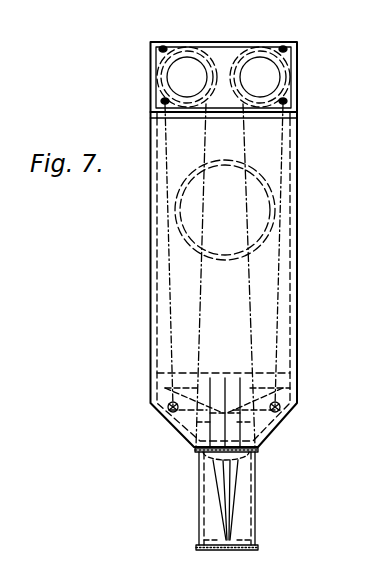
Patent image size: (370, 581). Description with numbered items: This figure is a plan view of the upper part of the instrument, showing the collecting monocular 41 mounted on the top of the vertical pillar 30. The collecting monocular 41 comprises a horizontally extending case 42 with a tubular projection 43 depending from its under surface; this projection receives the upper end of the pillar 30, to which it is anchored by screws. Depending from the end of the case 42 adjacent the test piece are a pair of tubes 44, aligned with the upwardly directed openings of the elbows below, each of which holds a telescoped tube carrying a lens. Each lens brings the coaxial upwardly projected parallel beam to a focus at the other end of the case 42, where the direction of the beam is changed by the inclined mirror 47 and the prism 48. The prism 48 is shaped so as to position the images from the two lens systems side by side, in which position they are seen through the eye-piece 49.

The vertical pillar 30 is at (197, 209).
The collecting monocular 41 is at (307, 267).
The case 42 is at (150, 300).
The tubular projection 43 is at (275, 203).
The tubes 44 is at (163, 74).
The inclined mirror 47 is at (221, 93).
The prism 48 is at (193, 423).
The eye-piece 49 is at (242, 493).